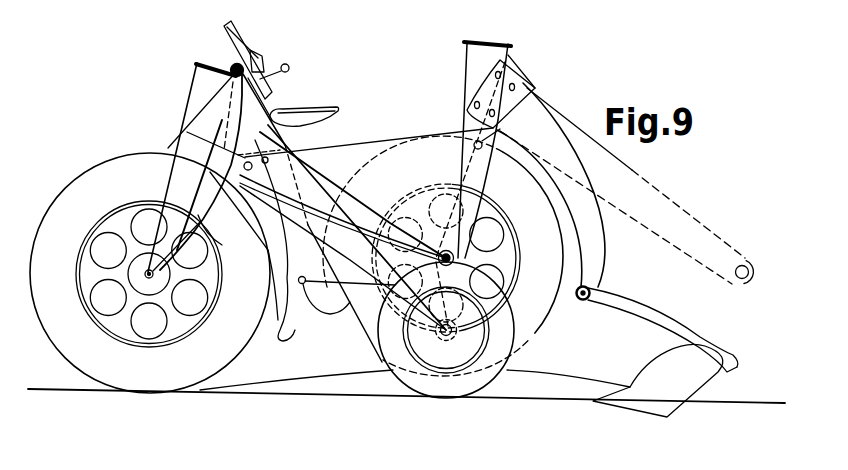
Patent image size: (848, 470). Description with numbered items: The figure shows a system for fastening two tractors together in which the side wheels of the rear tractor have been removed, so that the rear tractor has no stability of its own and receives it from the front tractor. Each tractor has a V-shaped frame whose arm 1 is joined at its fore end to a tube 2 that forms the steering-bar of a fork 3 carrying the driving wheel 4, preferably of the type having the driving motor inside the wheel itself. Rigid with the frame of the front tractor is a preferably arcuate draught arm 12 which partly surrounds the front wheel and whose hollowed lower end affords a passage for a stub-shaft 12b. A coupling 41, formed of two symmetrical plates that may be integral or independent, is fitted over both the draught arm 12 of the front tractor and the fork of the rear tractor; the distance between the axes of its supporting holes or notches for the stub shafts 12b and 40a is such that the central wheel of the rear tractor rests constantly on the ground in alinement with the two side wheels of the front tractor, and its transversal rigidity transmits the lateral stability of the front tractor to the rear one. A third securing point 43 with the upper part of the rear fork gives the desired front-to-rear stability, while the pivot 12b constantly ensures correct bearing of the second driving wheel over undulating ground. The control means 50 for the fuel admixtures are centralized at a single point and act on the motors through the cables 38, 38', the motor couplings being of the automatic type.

The arm 1 is at (258, 118).
The tube 2 is at (470, 69).
The fork 3 is at (196, 195).
The driving wheel 4 is at (219, 352).
The draught arm 12 is at (290, 318).
The stub-shaft 12b is at (347, 296).
The cable 38 is at (226, 248).
The cable 38' is at (304, 126).
The stub shaft 40a is at (455, 262).
The coupling 41 is at (343, 157).
The securing point 43 is at (493, 127).
The control means 50 is at (289, 66).